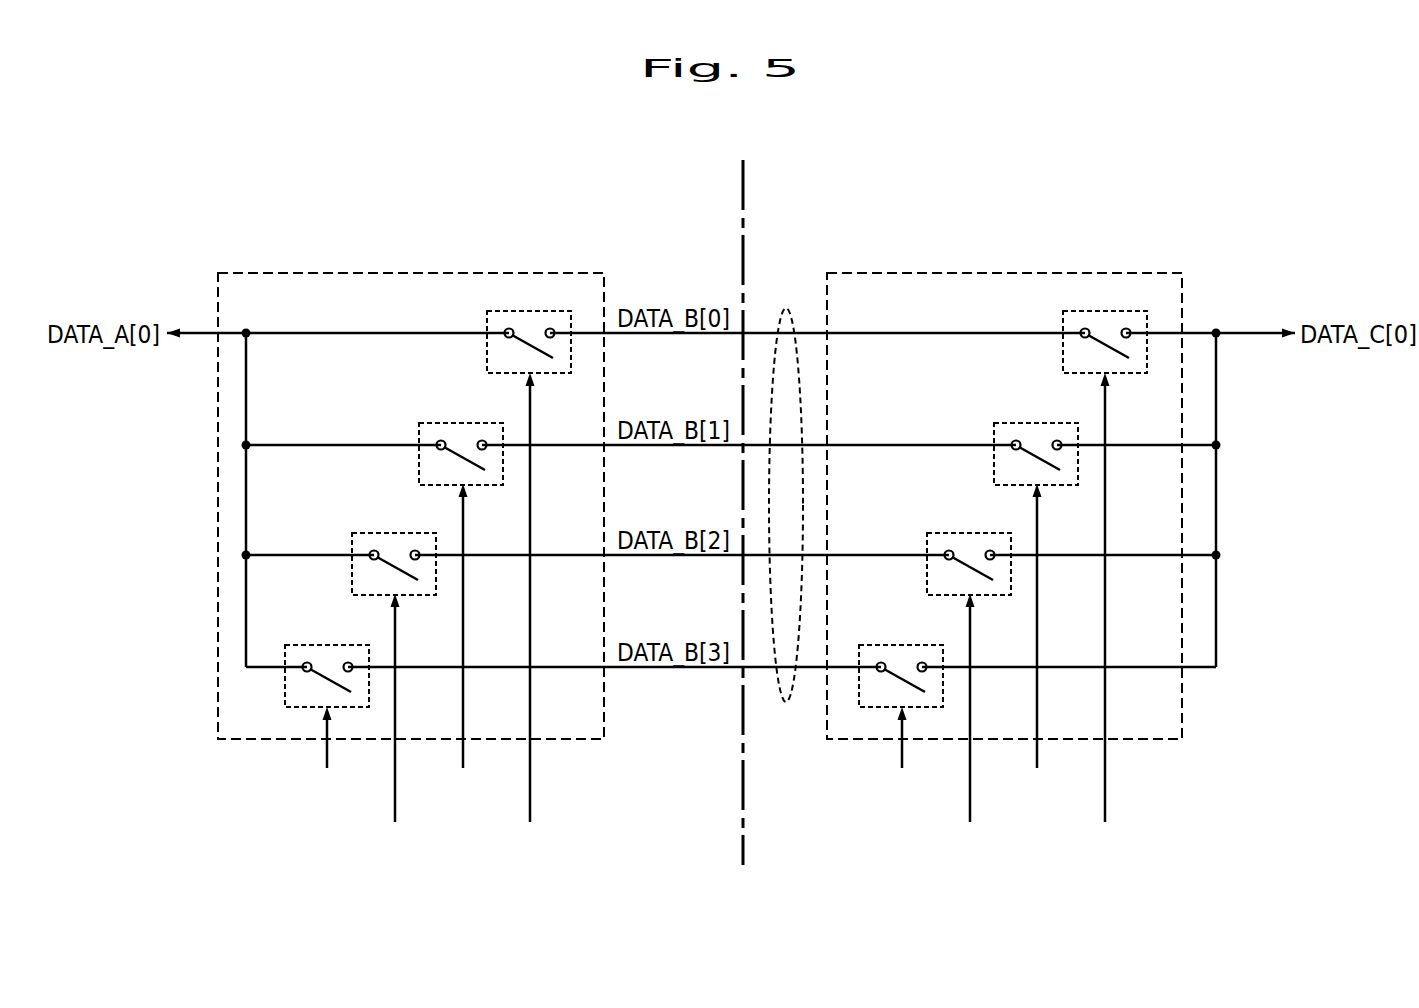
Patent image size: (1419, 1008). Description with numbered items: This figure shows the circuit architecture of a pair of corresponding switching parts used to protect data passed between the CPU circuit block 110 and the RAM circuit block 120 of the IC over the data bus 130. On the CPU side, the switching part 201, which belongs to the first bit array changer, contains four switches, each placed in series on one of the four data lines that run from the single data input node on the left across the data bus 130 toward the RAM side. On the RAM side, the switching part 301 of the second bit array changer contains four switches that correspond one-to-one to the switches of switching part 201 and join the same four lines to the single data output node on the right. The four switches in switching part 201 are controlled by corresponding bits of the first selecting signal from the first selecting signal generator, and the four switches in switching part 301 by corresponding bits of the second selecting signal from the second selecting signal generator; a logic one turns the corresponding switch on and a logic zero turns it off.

The CPU circuit block 110 is at (743, 207).
The RAM circuit block 120 is at (743, 207).
The data bus 130 is at (786, 309).
The switching part 201 is at (270, 272).
The switching part 301 is at (1127, 272).